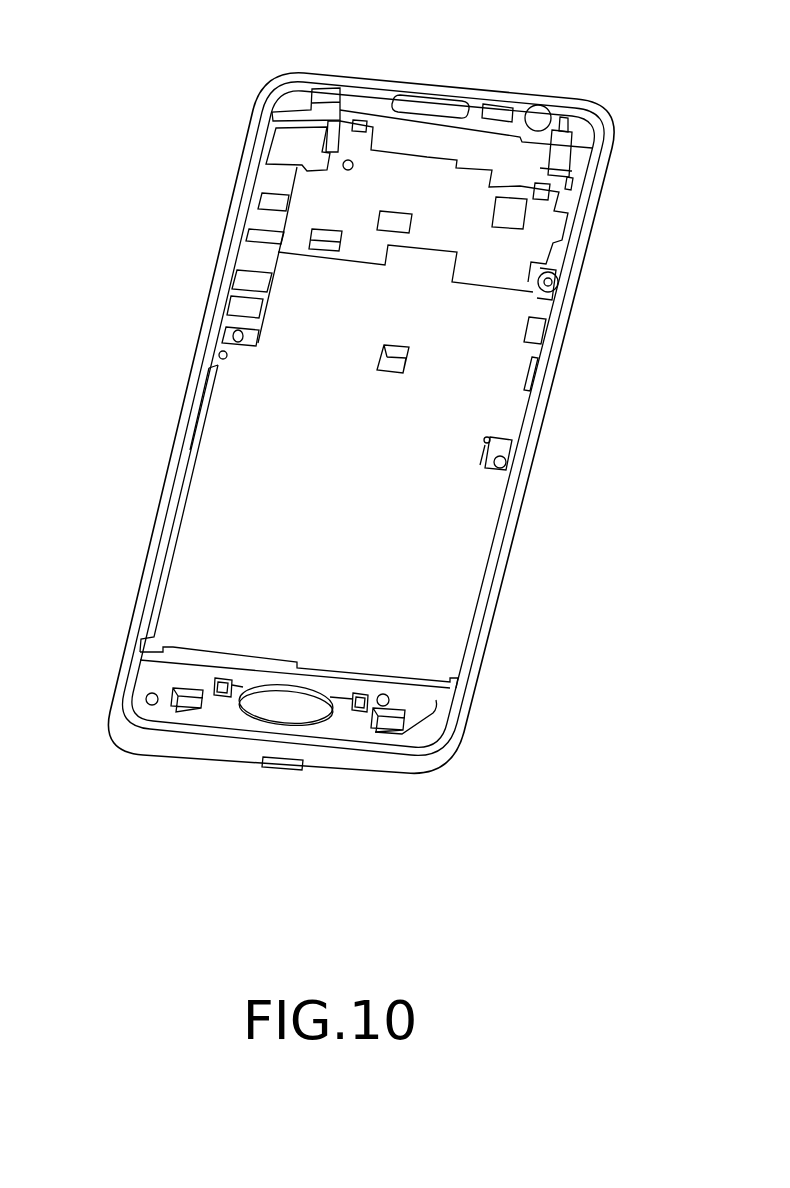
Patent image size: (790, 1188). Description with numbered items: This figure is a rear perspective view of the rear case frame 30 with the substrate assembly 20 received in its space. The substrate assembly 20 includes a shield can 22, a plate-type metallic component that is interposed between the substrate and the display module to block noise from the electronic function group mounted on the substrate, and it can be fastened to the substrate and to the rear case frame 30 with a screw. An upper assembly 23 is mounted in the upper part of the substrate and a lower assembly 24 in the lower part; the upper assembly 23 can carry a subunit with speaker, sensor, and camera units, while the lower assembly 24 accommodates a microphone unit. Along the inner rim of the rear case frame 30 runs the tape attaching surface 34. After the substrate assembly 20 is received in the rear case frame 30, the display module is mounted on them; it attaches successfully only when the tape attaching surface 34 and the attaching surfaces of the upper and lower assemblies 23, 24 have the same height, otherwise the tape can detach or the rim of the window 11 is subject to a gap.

The window 11 is at (587, 126).
The substrate assembly 20 is at (503, 418).
The shield can 22 is at (210, 454).
The upper assembly 23 is at (573, 127).
The lower assembly 24 is at (222, 708).
The rear case frame 30 is at (508, 537).
The tape attaching surface 34 is at (402, 735).